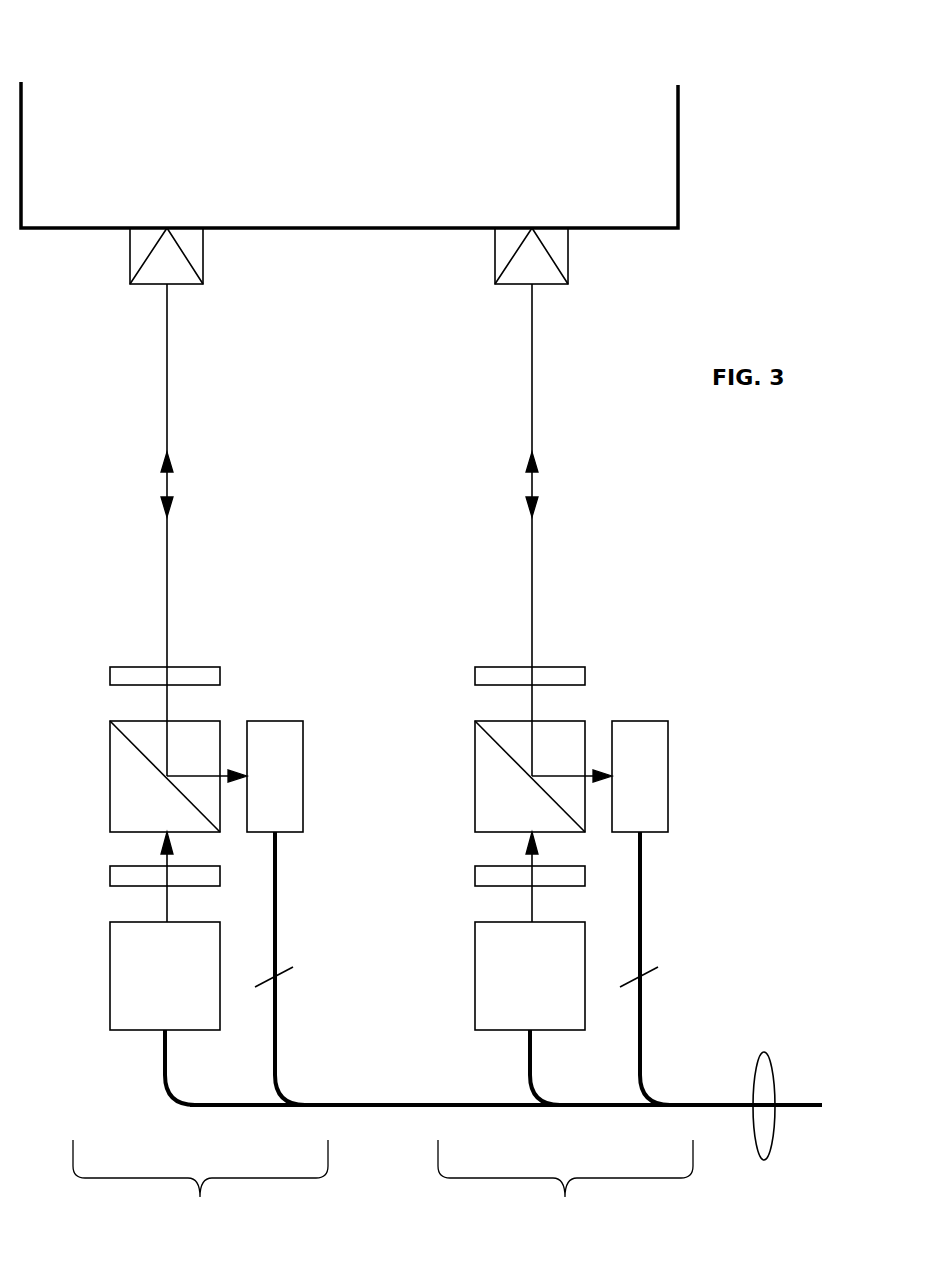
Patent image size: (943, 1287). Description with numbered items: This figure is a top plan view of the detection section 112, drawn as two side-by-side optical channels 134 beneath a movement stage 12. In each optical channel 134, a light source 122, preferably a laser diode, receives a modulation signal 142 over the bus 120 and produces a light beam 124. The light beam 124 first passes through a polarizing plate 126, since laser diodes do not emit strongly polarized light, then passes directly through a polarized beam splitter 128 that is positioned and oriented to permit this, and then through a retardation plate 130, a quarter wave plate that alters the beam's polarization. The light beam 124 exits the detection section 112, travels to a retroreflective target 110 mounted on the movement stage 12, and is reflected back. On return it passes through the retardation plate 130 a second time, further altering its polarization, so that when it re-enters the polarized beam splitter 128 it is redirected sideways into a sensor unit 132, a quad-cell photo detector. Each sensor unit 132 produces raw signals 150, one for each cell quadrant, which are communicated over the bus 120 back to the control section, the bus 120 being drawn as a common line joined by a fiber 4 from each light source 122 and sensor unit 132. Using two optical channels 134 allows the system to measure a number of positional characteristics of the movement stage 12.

The movement stage 12 is at (107, 187).
The optical fiber 4 is at (469, 971).
The retroreflective target 110 is at (130, 263).
The detection section 112 is at (714, 597).
The bus 120 is at (764, 1160).
The light source 122 is at (186, 987).
The light beam 124 is at (167, 375).
The polarizing plate 126 is at (110, 876).
The polarized beam splitter 128 is at (110, 776).
The retardation plate 130 is at (110, 676).
The sensor unit 132 is at (303, 777).
The optical channel 134 is at (383, 1188).
The modulation signal 142 is at (163, 1058).
The raw signal 150 is at (277, 1057).